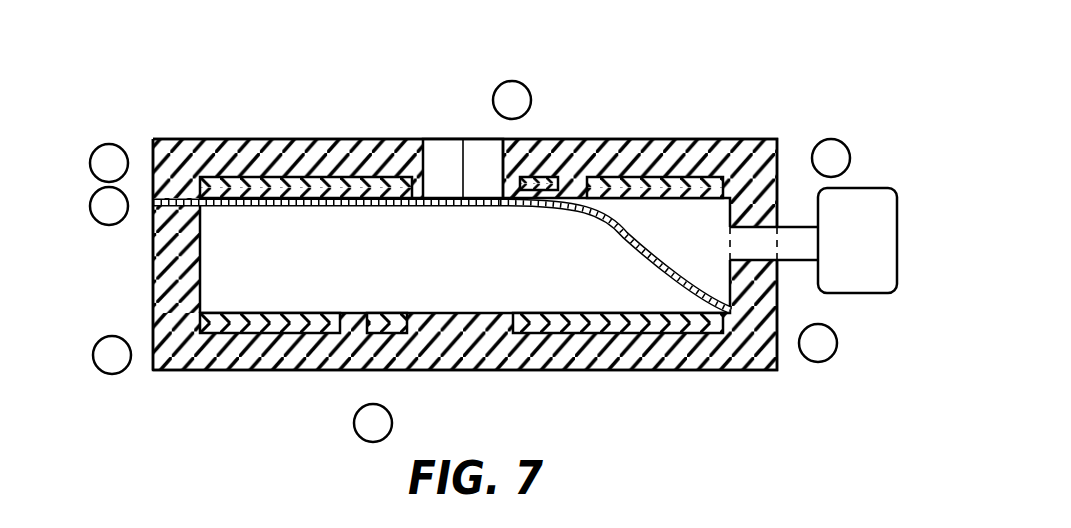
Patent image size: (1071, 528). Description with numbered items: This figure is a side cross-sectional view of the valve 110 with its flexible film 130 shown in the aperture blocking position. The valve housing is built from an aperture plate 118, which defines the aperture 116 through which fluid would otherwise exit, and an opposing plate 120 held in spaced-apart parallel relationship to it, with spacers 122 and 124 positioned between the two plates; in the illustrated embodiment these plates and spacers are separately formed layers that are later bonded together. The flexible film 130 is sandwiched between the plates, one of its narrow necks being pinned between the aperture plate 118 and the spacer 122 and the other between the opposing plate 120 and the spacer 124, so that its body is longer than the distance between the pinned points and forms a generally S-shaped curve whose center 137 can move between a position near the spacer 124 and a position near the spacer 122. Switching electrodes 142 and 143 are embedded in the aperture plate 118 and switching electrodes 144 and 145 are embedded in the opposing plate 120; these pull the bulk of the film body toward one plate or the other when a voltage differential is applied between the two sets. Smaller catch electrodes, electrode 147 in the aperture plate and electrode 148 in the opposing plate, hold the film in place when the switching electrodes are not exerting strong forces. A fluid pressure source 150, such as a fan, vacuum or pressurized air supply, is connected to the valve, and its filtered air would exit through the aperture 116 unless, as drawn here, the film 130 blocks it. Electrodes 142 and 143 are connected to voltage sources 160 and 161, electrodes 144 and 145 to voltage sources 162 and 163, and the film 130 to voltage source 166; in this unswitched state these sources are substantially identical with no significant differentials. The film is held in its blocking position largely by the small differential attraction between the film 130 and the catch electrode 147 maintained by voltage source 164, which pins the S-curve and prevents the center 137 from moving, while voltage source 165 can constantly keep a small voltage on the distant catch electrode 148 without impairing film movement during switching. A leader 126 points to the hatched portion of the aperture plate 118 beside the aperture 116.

The valve 110 is at (143, 125).
The aperture plate 118 is at (183, 142).
The aperture 116 is at (438, 132).
The opening side wall 126 is at (502, 167).
The switching electrode 142 is at (323, 180).
The catch electrode 147 is at (552, 178).
The switching electrode 143 is at (687, 180).
The voltage source 164 is at (527, 182).
The voltage source 160 is at (200, 182).
The voltage source 161 is at (725, 180).
The voltage source 166 is at (153, 203).
The voltage source 162 is at (200, 328).
The voltage source 163 is at (730, 330).
The voltage source 165 is at (377, 340).
The flexible film 130 is at (432, 206).
The center of S-curve 137 is at (610, 228).
The spacer 122 is at (152, 287).
The opposing plate 120 is at (742, 365).
The spacer 124 is at (777, 292).
The fluid pressure source 150 is at (882, 256).
The switching electrode 144 is at (275, 333).
The catch electrode 148 is at (393, 333).
The switching electrode 145 is at (627, 333).